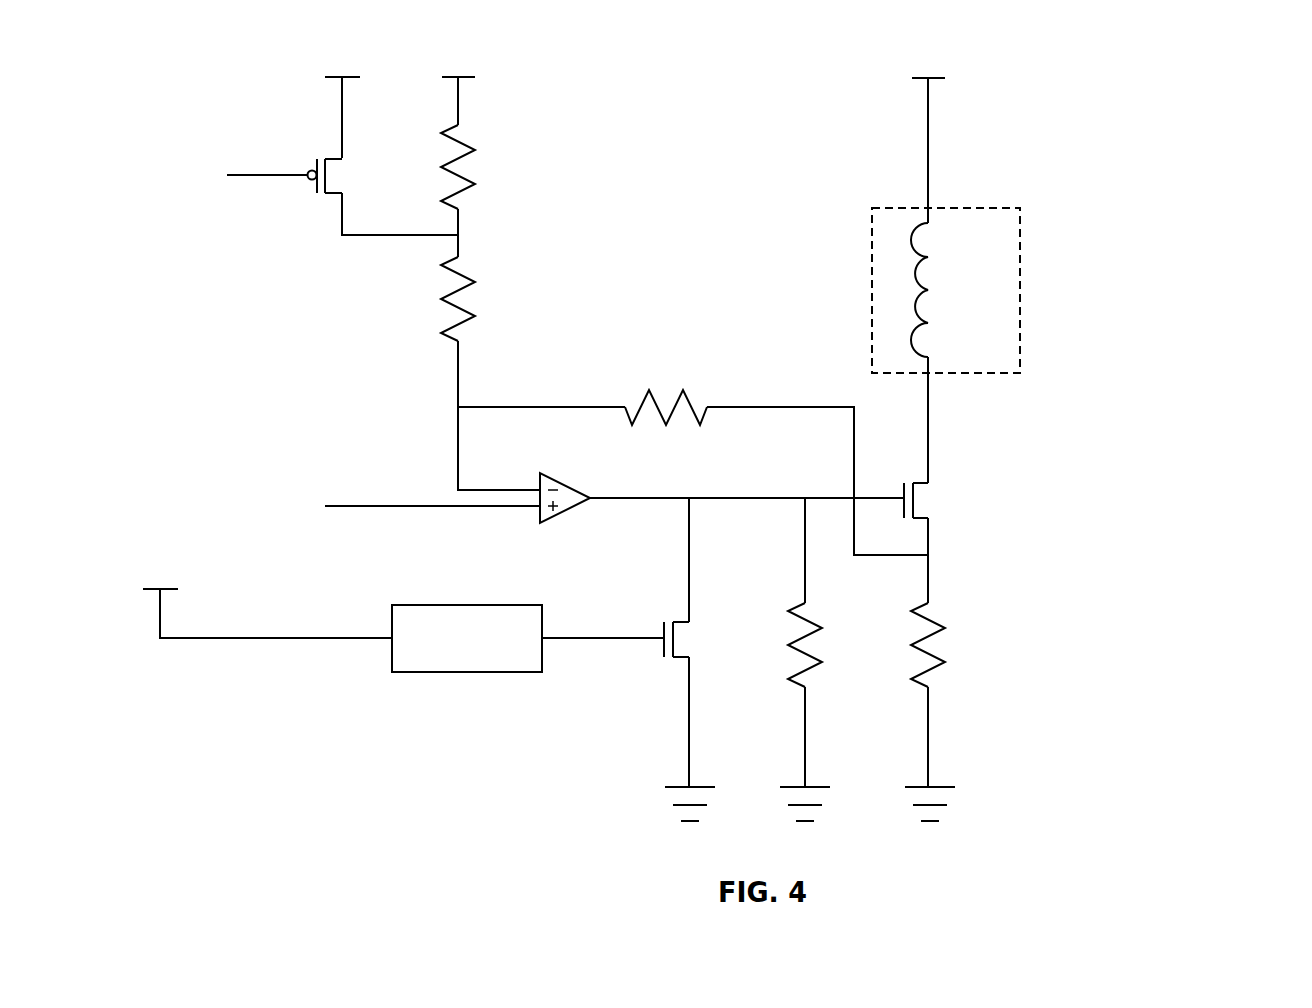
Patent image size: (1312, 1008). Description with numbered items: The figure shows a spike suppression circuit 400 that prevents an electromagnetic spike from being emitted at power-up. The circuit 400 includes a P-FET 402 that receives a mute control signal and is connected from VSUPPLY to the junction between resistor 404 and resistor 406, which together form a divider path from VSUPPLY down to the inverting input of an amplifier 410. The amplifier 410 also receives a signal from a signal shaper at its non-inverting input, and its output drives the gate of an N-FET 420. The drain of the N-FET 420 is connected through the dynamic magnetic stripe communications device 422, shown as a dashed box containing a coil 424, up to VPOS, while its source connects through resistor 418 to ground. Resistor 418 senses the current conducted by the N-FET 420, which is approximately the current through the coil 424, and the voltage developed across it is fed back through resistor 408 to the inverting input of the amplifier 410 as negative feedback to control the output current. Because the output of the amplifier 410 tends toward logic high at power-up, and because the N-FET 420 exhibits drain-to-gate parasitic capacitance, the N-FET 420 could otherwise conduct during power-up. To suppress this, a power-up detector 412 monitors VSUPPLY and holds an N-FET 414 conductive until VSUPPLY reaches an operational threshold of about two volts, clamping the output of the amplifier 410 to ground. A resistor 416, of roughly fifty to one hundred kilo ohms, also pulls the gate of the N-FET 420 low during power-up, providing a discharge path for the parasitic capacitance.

The spike suppression circuit 400 is at (1266, 444).
The P-FET 402 is at (328, 157).
The resistor 404 is at (450, 130).
The resistor 406 is at (450, 330).
The resistor 408 is at (645, 400).
The amplifier 410 is at (550, 475).
The power-up detector 412 is at (510, 605).
The N-FET 414 is at (685, 620).
The resistor 416 is at (793, 607).
The resistor 418 is at (918, 607).
The N-FET 420 is at (920, 483).
The dynamic magnetic stripe communications device 422 is at (893, 207).
The coil 424 is at (922, 320).